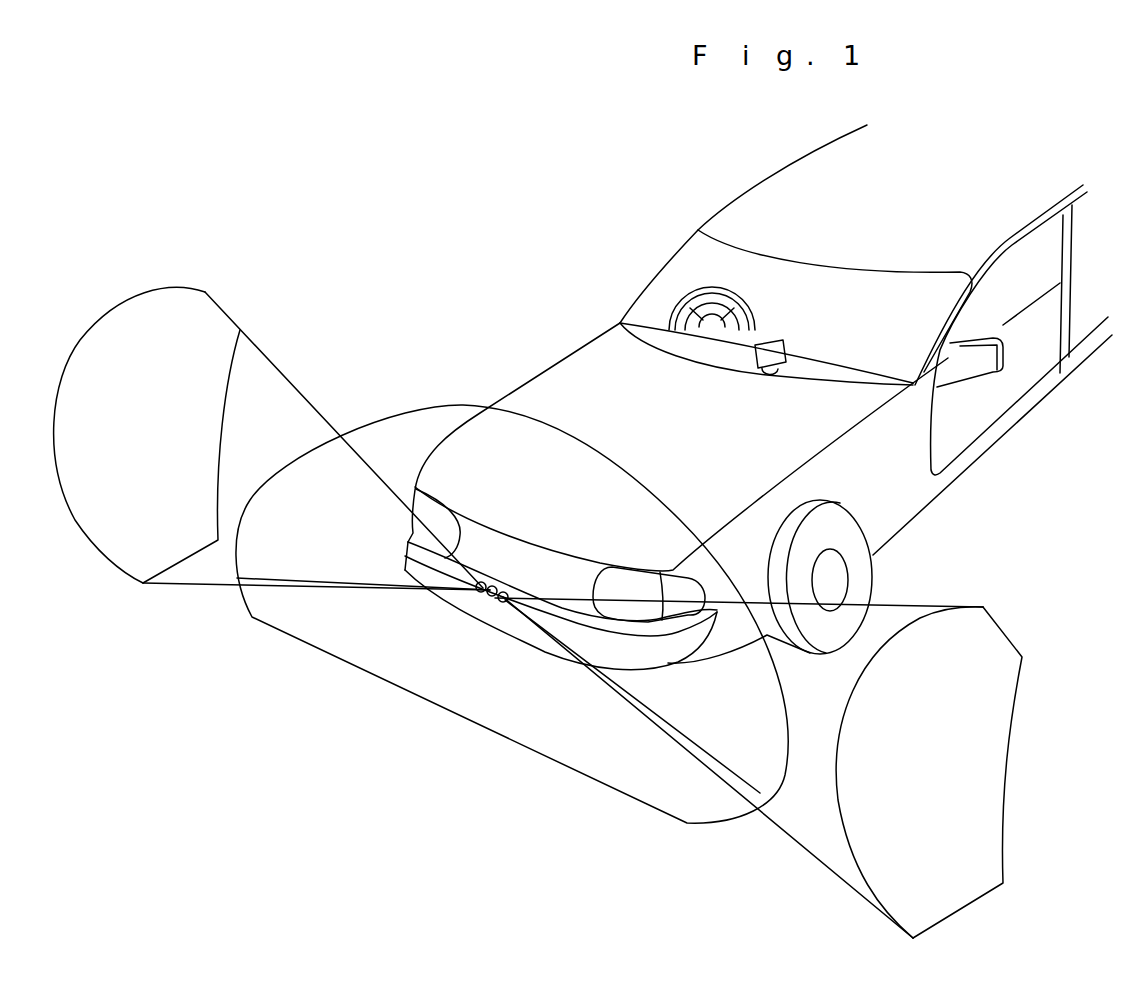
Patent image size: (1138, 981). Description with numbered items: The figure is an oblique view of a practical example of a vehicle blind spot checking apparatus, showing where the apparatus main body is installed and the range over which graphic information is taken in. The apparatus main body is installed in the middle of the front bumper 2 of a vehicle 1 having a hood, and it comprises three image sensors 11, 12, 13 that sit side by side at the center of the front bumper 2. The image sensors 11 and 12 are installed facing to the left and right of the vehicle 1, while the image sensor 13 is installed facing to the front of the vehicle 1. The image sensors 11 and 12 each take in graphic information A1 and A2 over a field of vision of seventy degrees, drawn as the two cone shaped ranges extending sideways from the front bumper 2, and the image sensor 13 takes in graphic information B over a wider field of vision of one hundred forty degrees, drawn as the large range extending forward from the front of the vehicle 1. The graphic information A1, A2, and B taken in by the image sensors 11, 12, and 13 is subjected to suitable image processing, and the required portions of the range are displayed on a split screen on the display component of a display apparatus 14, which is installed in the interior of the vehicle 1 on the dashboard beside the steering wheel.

The vehicle 1 is at (585, 334).
The front bumper 2 is at (535, 647).
The image sensor 11 is at (489, 583).
The image sensor 12 is at (506, 590).
The image sensor 13 is at (505, 592).
The display apparatus 14 is at (785, 347).
The graphic information A1 is at (170, 435).
The graphic information A2 is at (935, 797).
The graphic information B is at (430, 671).